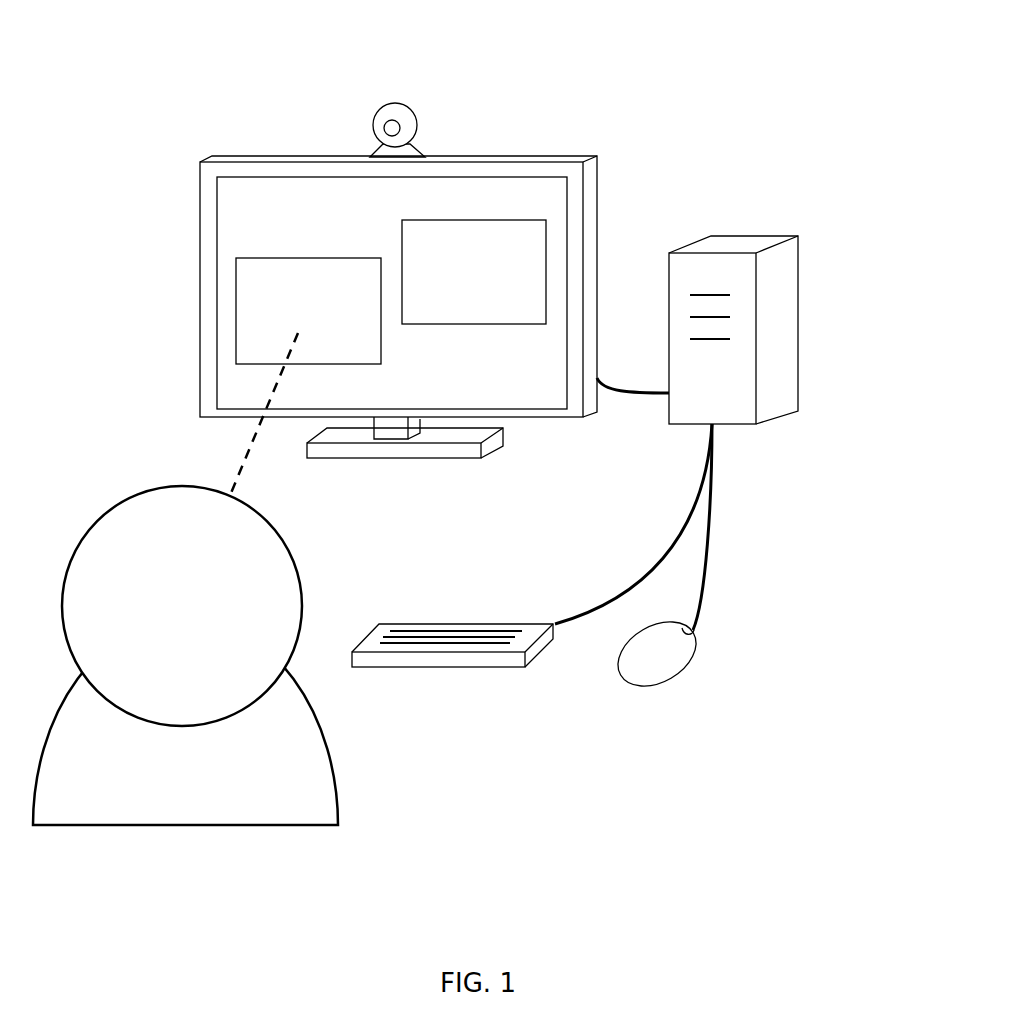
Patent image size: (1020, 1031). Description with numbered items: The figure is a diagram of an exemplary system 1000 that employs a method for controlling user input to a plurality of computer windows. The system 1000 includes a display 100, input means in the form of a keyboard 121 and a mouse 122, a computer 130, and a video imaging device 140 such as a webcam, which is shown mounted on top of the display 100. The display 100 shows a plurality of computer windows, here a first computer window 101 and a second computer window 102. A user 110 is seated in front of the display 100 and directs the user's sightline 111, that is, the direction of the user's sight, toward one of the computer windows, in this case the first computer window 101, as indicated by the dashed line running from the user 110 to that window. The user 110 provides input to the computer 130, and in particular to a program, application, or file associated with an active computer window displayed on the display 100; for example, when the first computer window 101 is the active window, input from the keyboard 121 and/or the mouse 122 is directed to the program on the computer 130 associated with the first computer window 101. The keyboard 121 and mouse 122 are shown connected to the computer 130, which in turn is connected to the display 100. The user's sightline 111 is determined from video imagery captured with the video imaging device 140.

The system 1000 is at (700, 58).
The display 100 is at (200, 190).
The first computer window 101 is at (235, 310).
The second computer window 102 is at (547, 272).
The video imaging device 140 is at (416, 112).
The computer 130 is at (798, 347).
The keyboard 121 is at (457, 622).
The mouse 122 is at (692, 663).
The user 110 is at (332, 775).
The sightline 111 is at (253, 445).